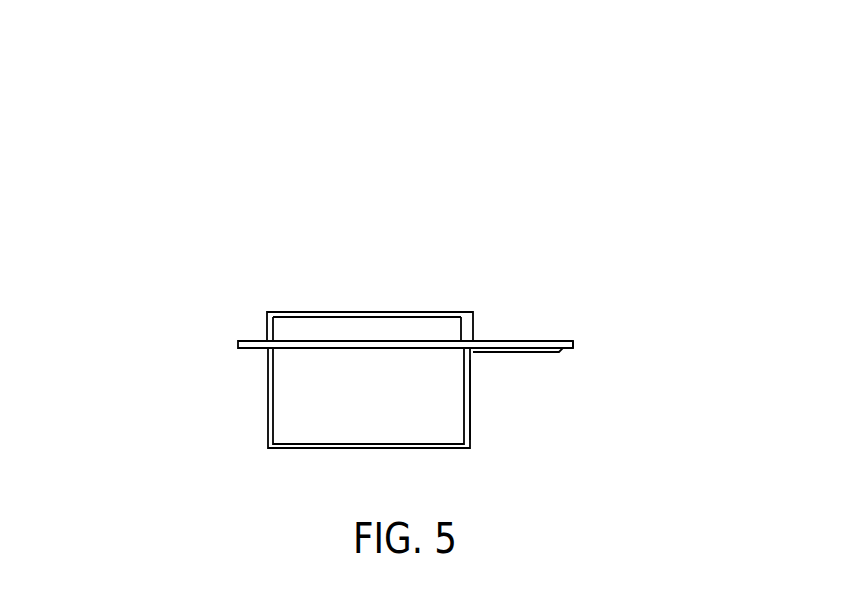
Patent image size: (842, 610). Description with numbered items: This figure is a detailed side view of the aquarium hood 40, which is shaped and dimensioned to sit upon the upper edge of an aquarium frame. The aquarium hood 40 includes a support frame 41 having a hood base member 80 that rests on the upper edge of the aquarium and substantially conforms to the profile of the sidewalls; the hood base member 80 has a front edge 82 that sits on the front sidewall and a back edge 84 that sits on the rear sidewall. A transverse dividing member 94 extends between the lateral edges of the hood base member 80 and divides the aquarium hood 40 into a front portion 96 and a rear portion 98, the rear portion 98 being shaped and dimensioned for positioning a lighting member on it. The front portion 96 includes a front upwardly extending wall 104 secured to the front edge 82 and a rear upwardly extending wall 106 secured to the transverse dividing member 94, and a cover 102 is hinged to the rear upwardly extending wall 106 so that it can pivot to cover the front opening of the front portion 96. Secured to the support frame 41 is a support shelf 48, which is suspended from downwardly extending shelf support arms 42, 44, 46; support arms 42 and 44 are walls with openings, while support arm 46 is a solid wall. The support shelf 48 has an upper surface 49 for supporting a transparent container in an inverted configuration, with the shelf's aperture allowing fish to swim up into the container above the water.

The aquarium hood 40 is at (482, 338).
The support frame 41 is at (574, 341).
The shelf support arm 42 is at (267, 423).
The shelf support arm 44 is at (382, 413).
The shelf support arm 46 is at (468, 425).
The support shelf 48 is at (450, 450).
The upper surface 49 is at (300, 443).
The hood base member 80 is at (240, 342).
The front edge 82 is at (255, 350).
The back edge 84 is at (562, 352).
The transverse dividing member 94 is at (470, 352).
The front portion 96 is at (290, 342).
The rear portion 98 is at (558, 341).
The cover 102 is at (337, 312).
The front upwardly extending wall 104 is at (268, 317).
The rear upwardly extending wall 106 is at (465, 318).